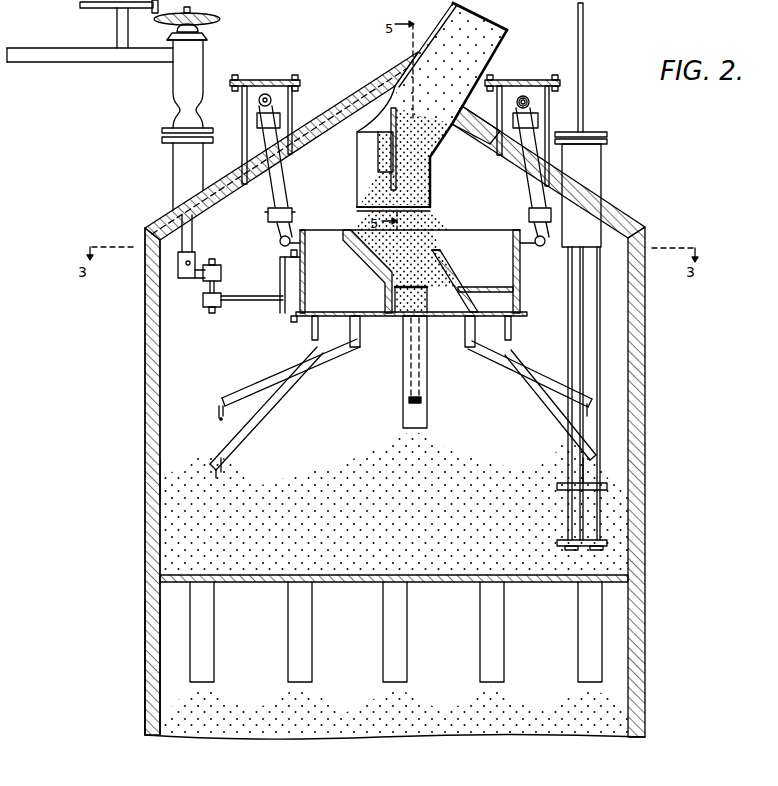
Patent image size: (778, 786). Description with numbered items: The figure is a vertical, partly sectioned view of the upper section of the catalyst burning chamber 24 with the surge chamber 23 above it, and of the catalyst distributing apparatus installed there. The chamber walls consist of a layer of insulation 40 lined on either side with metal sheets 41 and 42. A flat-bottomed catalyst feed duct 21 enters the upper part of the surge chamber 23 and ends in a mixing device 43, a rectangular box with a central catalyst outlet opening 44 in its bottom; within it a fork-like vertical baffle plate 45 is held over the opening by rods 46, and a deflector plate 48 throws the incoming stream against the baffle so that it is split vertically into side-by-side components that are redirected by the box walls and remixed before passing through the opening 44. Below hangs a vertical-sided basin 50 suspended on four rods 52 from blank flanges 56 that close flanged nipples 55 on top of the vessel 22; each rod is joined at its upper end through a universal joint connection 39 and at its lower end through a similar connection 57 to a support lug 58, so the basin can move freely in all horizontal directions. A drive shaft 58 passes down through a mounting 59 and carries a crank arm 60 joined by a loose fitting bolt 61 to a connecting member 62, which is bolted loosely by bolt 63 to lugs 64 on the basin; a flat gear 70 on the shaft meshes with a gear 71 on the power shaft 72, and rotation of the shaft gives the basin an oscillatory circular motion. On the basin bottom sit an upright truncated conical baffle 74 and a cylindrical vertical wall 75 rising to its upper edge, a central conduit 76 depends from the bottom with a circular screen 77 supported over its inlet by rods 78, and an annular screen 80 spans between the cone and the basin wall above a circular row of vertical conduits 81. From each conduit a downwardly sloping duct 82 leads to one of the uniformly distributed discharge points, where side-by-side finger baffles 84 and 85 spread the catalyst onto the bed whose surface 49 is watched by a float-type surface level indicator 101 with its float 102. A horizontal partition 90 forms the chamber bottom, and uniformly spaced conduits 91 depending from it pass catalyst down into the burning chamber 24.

The catalyst feed duct 21 is at (447, 25).
The vessel 22 is at (160, 217).
The surge chamber 23 is at (172, 419).
The catalyst burning chamber 24 is at (150, 665).
The universal joint type connection 39 is at (531, 103).
The layer of insulation 40 is at (155, 500).
The metal sheet 41 is at (147, 532).
The metal sheet 42 is at (165, 475).
The mixing device 43 is at (432, 162).
The catalyst outlet opening 44 is at (408, 198).
The vertical baffle plate 45 is at (391, 120).
The rods 46 is at (378, 140).
The deflector plate 48 is at (470, 118).
The bed surface 49 is at (433, 465).
The basin 50 is at (520, 280).
The rods 52 is at (280, 185).
The flanged nipples 55 is at (298, 95).
The blank flanges 56 is at (499, 79).
The universal joint type connection 57 is at (278, 238).
The drive shaft 58 is at (193, 248).
The mounting 59 is at (173, 80).
The crank arm 60 is at (180, 268).
The loose fitting bolt 61 is at (207, 285).
The connecting member 62 is at (238, 300).
The bolt 63 is at (290, 290).
The lugs 64 is at (291, 259).
The flat gear 70 is at (208, 18).
The gear 71 is at (155, 12).
The power shaft 72 is at (84, 8).
The conical baffle 74 is at (443, 263).
The cylindrical vertical wall 75 is at (438, 252).
The conduit 76 is at (428, 372).
The circular screen 77 is at (418, 286).
The rods 78 is at (428, 316).
The annular screen 80 is at (497, 287).
The vertical conduits 81 is at (319, 352).
The downwardly sloping duct 82 is at (278, 374).
The finger baffle 84 is at (217, 412).
The finger baffle 85 is at (220, 418).
The horizontal partition 90 is at (613, 577).
The conduits 91 is at (488, 630).
The surface level indicator 101 is at (603, 171).
The float 102 is at (606, 484).